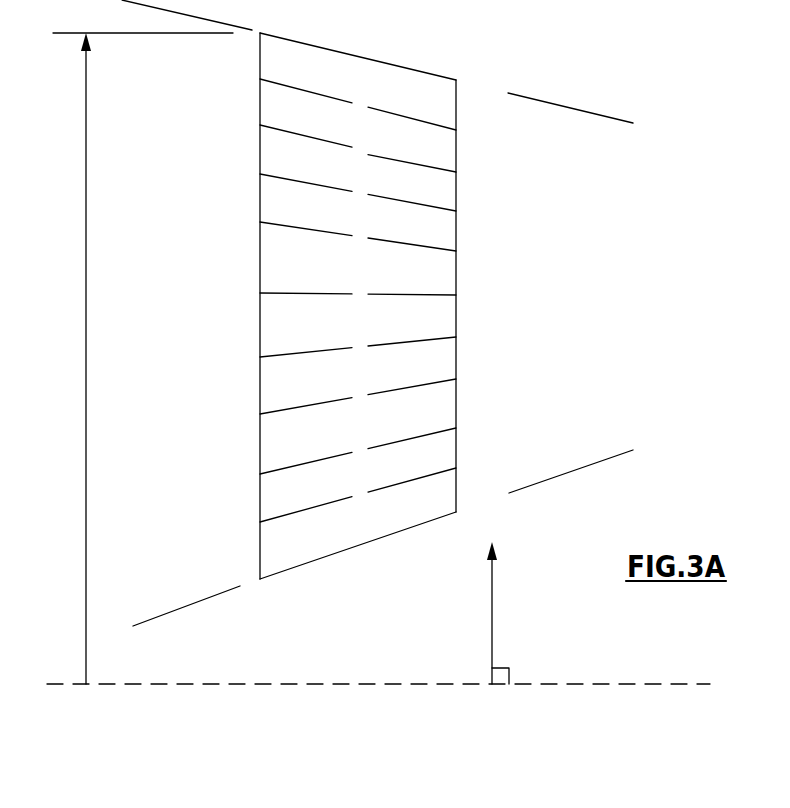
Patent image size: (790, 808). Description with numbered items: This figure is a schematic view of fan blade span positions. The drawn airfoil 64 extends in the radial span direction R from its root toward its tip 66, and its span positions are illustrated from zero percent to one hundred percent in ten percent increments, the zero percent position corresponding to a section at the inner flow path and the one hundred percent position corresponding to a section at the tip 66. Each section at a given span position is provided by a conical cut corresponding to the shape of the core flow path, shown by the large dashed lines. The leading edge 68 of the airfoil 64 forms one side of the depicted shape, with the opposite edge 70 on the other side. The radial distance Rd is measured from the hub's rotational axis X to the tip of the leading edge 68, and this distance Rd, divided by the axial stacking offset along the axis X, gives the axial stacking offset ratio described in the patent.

The airfoil 64 is at (374, 303).
The tip 66 is at (355, 56).
The leading edge 68 is at (258, 243).
The trailing edge 70 is at (456, 282).
The radial distance Rd is at (85, 320).
The radial span direction R is at (492, 620).
The axis X is at (300, 683).